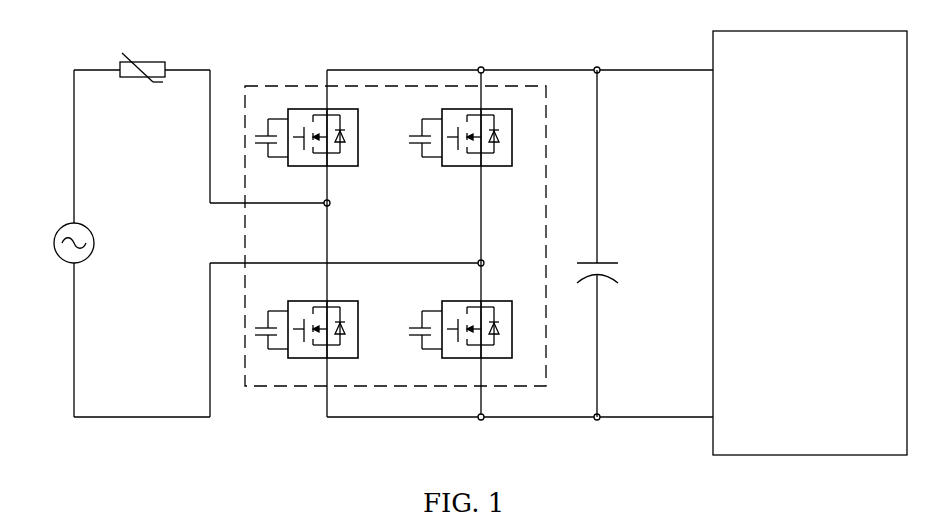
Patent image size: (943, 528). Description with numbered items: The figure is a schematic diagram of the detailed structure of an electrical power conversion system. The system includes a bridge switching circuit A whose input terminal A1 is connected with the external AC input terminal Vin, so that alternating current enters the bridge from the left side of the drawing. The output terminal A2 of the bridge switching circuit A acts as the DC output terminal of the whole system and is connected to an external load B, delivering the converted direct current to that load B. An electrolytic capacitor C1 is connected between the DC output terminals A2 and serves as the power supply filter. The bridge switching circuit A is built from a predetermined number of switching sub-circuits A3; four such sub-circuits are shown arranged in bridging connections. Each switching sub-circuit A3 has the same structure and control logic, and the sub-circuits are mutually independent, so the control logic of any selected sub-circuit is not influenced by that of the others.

The external AC input terminal Vin is at (60, 232).
The bridge switching circuit A is at (395, 218).
The input terminal A1 is at (347, 233).
The output terminal A2 is at (520, 233).
The switching sub-circuit A3 is at (355, 165).
The external load B is at (810, 243).
The electrolytic capacitor C1 is at (606, 243).